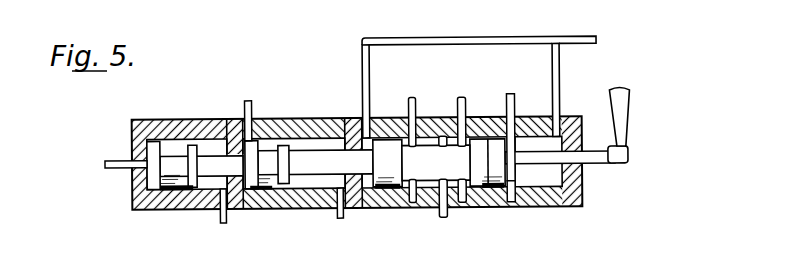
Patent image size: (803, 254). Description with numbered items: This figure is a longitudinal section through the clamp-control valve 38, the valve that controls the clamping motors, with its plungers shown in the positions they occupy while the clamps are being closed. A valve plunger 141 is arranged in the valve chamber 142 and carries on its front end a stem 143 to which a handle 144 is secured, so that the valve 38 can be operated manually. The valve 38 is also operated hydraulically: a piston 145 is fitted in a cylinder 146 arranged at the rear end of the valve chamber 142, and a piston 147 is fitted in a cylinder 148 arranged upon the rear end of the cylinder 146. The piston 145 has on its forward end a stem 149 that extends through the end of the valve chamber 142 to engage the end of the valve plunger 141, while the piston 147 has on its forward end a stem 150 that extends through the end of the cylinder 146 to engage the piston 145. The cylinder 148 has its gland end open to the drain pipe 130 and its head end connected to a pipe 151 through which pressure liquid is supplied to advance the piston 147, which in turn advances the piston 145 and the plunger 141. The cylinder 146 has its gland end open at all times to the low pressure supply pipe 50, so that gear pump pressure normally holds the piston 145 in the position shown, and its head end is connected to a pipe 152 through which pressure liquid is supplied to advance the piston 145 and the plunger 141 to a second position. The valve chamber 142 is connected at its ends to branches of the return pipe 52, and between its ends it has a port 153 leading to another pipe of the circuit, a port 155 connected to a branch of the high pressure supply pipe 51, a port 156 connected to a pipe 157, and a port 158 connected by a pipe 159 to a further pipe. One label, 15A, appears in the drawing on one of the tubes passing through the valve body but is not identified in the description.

The clamp-control valve 38 is at (583, 203).
The low pressure supply pipe 50 is at (342, 220).
The high pressure supply pipe 51 is at (462, 97).
The return pipe 52 is at (478, 37).
The drain pipe 130 is at (223, 221).
The valve plunger 141 is at (436, 163).
The valve chamber 142 is at (551, 182).
The stem 143 is at (608, 169).
The handle 144 is at (632, 94).
The piston 145 is at (267, 187).
The cylinder 146 is at (324, 146).
The piston 147 is at (170, 194).
The cylinder 148 is at (208, 147).
The stem 149 is at (315, 162).
The stem 150 is at (201, 166).
The pipe 151 is at (118, 156).
The pipe 152 is at (252, 100).
The port 153 is at (512, 198).
The conduit 15A is at (510, 96).
The port 155 is at (464, 203).
The port 156 is at (446, 137).
The pipe 157 is at (442, 219).
The port 158 is at (413, 194).
The pipe 159 is at (412, 97).